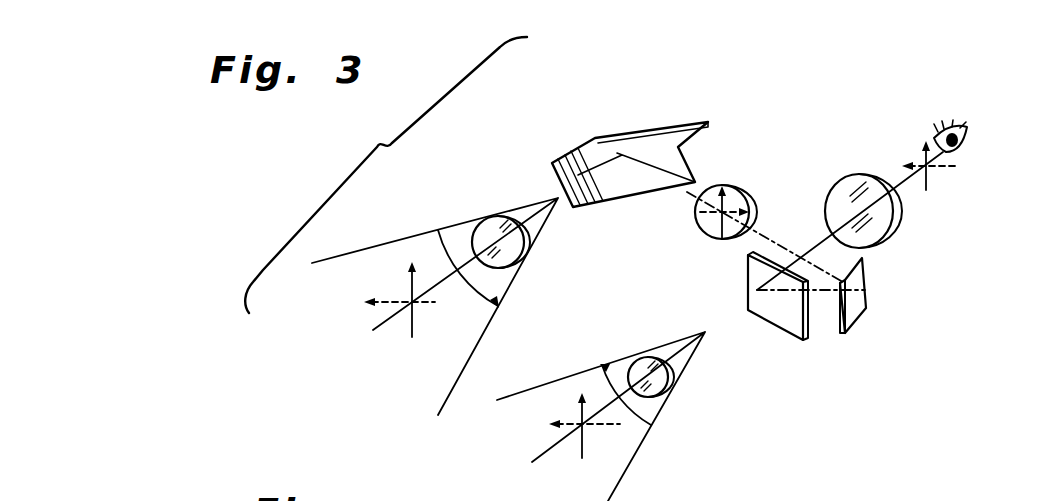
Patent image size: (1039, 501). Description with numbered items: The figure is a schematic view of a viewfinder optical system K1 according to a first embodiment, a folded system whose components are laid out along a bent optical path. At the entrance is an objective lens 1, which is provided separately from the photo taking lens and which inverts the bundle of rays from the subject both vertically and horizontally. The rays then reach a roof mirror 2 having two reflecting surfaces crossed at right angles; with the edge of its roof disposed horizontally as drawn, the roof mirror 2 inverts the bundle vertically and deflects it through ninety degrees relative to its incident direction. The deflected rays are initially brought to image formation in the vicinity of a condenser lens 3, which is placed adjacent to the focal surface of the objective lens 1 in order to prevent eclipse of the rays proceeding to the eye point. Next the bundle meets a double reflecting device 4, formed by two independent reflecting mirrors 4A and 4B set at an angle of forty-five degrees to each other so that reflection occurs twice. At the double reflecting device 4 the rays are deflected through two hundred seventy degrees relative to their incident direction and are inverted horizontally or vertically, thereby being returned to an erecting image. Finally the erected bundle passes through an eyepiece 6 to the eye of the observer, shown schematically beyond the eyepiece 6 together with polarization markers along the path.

The objective lens 1 is at (480, 217).
The roof mirror 2 is at (625, 137).
The condenser lens 3 is at (707, 240).
The double reflecting device 4 is at (790, 363).
The reflecting mirror 4A is at (845, 337).
The reflecting mirror 4B is at (763, 308).
The eyepiece 6 is at (893, 237).
The projection lens P is at (660, 397).
The viewfinder optical system K1 is at (758, 106).